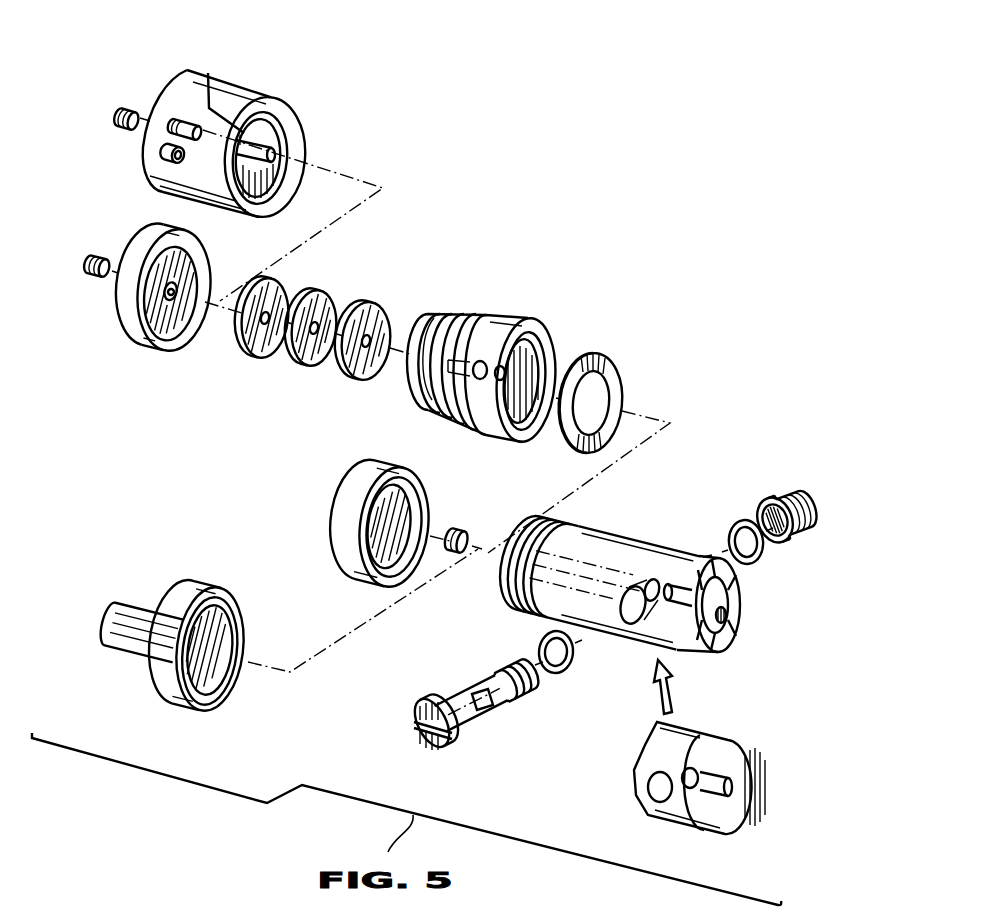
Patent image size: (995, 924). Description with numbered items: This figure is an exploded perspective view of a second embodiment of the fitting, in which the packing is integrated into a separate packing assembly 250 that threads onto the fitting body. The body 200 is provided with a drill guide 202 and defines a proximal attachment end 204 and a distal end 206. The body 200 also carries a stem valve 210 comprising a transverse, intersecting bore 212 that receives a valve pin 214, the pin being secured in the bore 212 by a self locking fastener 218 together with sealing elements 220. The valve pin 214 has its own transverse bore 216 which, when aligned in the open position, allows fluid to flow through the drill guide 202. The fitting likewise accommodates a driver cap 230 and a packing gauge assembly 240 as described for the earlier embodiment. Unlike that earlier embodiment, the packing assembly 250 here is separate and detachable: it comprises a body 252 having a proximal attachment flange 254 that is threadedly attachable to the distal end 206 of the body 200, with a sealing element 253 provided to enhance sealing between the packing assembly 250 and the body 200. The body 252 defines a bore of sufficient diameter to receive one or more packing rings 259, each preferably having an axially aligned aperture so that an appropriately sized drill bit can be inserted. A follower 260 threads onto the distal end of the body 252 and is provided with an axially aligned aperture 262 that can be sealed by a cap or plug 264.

The body 200 is at (640, 591).
The drill guide 202 is at (725, 620).
The proximal attachment end 204 is at (702, 648).
The distal end 206 is at (557, 542).
The stem valve 210 is at (475, 731).
The transverse intersecting bore 212 is at (645, 640).
The valve pin 214 is at (434, 752).
The transverse bore 216 is at (488, 710).
The self locking fastener 218 is at (808, 507).
The sealing elements 220 is at (761, 560).
The driver cap 230 is at (165, 711).
The packing gauge assembly 240 is at (227, 72).
The packing assembly 250 is at (354, 279).
The body 252 is at (458, 318).
The sealing element 253 is at (598, 353).
The proximal attachment flange 254 is at (527, 320).
The packing rings 259 is at (311, 367).
The follower 260 is at (137, 345).
The axially aligned aperture 262 is at (176, 310).
The cap or plug 264 is at (94, 279).